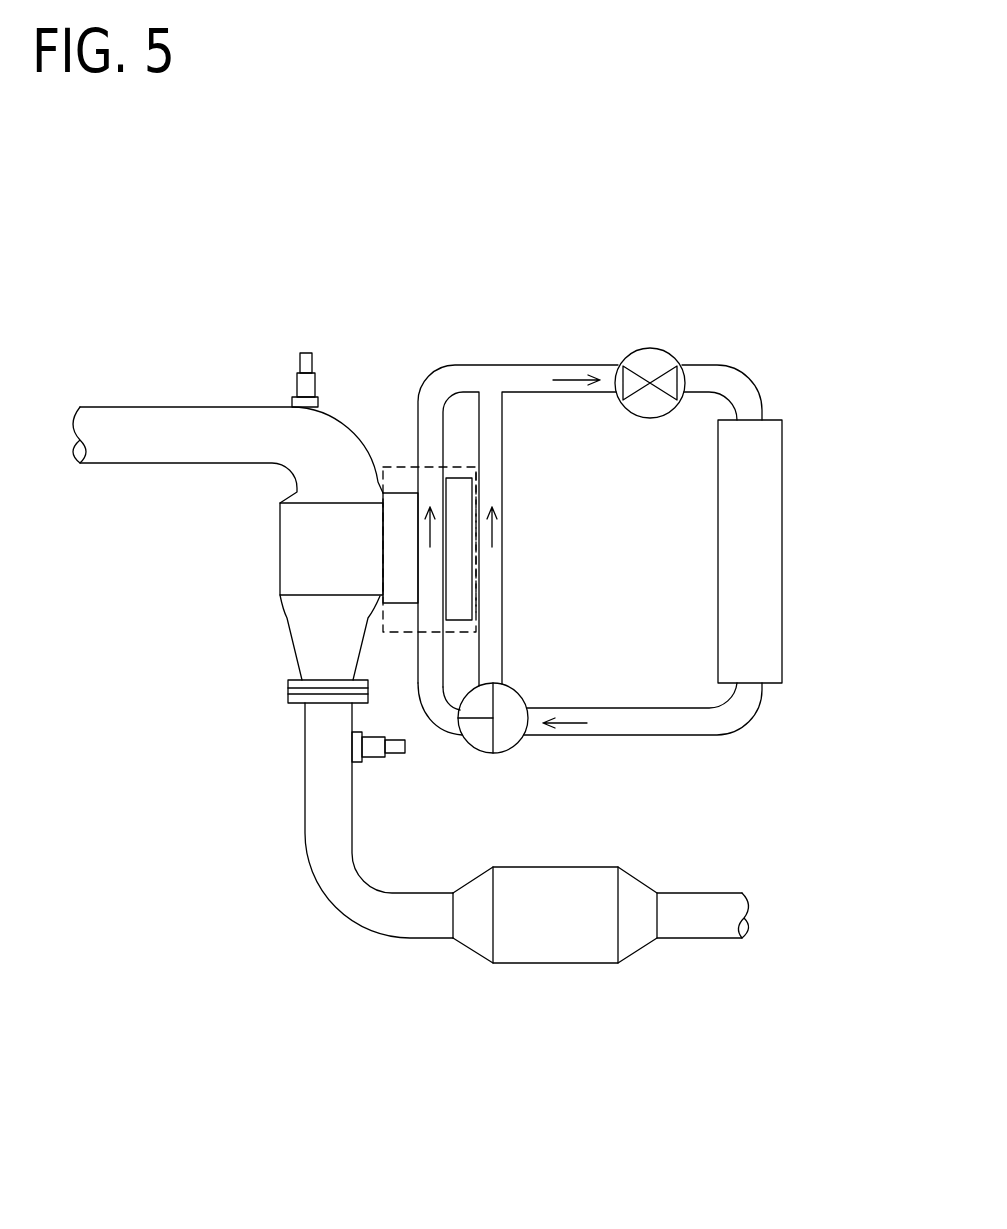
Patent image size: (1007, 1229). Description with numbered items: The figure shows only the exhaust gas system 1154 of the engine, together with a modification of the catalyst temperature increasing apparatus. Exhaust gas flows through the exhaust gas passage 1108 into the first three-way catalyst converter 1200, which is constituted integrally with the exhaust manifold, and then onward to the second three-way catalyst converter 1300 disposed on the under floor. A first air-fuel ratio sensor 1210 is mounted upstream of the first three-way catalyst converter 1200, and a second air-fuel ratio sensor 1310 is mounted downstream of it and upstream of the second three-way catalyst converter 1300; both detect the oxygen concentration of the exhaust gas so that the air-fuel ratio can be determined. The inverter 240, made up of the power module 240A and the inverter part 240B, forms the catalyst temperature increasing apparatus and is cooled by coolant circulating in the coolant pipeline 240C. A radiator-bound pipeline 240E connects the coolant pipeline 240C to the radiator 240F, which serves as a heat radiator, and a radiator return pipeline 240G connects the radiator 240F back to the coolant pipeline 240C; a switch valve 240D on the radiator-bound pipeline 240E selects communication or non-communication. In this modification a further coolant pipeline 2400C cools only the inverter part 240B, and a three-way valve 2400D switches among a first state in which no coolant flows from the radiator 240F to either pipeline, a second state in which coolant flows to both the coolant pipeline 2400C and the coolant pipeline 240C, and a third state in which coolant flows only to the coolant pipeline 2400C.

The exhaust gas passage 1108 is at (158, 405).
The exhaust gas system 1154 is at (243, 348).
The first three-way catalyst converter 1200 is at (305, 525).
The first air-fuel ratio sensor 1210 is at (317, 377).
The inverter 240 is at (432, 633).
The power module 240A is at (400, 500).
The inverter part 240B is at (462, 497).
The coolant pipeline 240C is at (427, 563).
The switch valve 240D is at (655, 345).
The radiator-bound pipeline 240E is at (740, 395).
The radiator 240F is at (767, 567).
The radiator return pipeline 240G is at (633, 727).
The coolant pipeline 2400C is at (499, 470).
The three-way valve 2400D is at (520, 692).
The second air-fuel ratio sensor 1310 is at (373, 762).
The second three-way catalyst converter 1300 is at (552, 963).